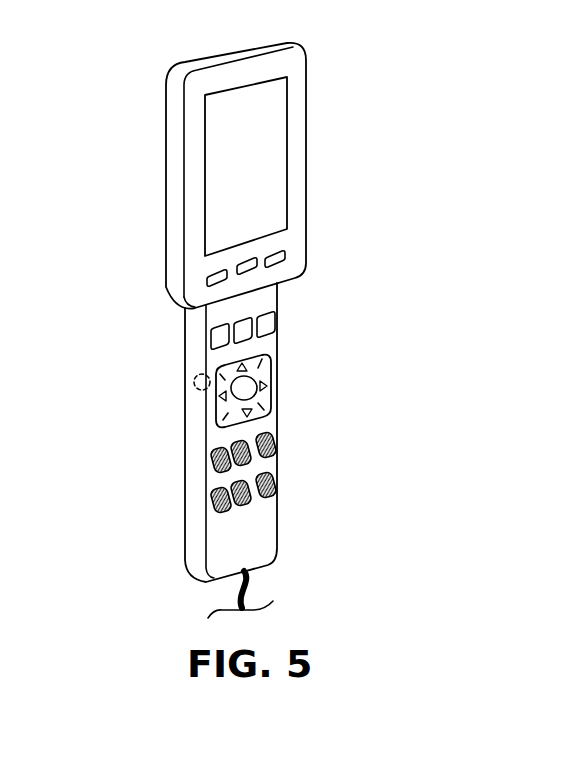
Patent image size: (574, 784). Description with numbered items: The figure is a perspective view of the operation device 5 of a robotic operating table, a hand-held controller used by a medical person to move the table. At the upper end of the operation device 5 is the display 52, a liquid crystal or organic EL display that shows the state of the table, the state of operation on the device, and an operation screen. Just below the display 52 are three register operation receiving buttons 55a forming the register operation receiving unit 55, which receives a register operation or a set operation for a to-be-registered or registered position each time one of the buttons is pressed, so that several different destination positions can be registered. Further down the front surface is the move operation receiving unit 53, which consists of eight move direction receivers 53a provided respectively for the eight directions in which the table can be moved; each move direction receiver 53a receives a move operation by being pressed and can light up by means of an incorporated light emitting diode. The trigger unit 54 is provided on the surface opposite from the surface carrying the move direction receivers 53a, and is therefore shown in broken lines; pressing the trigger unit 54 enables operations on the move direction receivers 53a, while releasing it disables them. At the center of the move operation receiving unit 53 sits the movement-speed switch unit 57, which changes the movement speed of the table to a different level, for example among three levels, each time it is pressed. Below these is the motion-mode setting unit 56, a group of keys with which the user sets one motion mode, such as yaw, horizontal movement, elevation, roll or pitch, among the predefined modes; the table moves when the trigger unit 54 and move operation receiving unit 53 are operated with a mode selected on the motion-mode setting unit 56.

The operation device 5 is at (381, 50).
The display 52 is at (274, 165).
The move operation receiving unit 53 is at (281, 360).
The move direction receiver 53a is at (239, 366).
The trigger unit 54 is at (195, 379).
The register operation receiving unit 55 is at (294, 257).
The register operation receiving button 55a is at (241, 263).
The motion-mode setting unit 56 is at (271, 465).
The movement-speed switch unit 57 is at (250, 388).